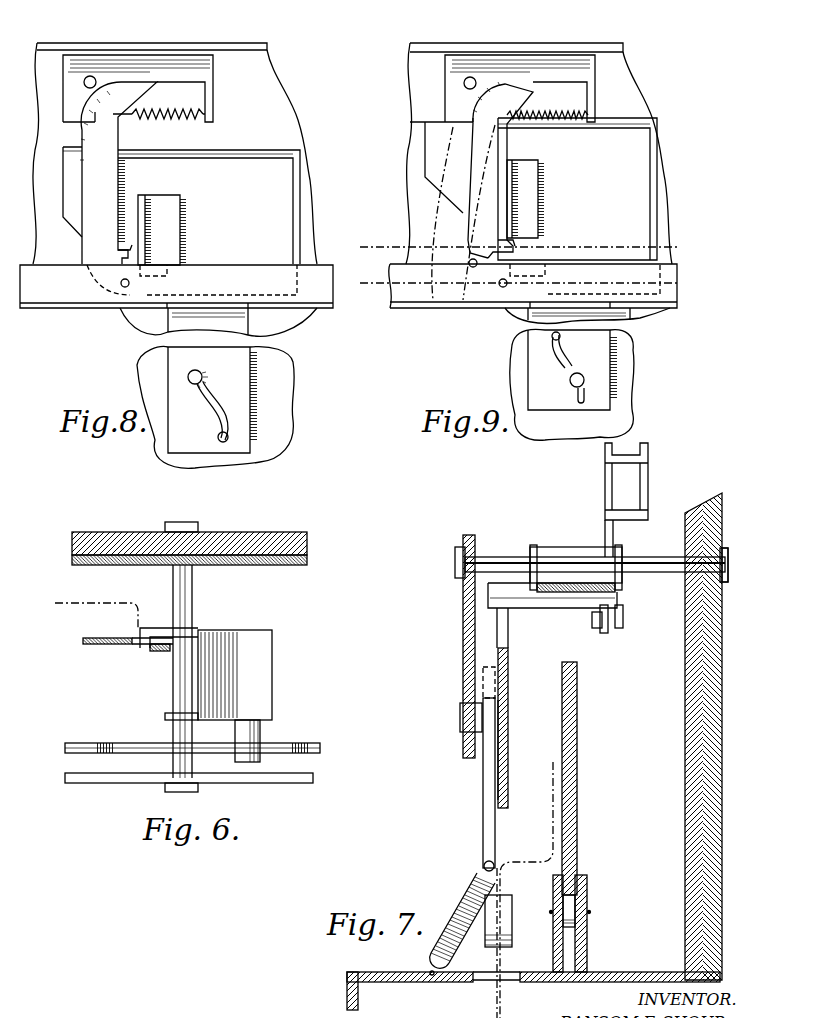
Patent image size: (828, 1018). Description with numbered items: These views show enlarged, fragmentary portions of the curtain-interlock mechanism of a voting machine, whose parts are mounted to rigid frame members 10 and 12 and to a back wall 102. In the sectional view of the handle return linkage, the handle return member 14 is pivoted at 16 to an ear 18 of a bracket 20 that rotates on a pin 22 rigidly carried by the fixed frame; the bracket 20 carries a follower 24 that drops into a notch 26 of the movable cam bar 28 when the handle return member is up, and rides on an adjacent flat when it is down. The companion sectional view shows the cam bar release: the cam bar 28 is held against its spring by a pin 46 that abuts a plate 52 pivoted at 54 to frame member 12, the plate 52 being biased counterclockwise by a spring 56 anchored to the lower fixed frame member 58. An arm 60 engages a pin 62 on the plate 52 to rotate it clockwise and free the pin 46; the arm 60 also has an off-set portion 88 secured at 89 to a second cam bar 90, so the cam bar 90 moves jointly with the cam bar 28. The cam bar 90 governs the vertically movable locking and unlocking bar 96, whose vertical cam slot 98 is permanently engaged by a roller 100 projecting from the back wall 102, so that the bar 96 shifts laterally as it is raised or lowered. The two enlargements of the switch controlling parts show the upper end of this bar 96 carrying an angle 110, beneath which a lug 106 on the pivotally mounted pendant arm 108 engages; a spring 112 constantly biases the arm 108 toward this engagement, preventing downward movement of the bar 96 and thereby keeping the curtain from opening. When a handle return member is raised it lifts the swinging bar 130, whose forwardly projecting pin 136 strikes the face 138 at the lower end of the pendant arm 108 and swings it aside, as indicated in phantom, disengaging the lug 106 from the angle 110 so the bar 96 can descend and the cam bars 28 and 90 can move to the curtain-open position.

In FIG. 9, the rigid frame member 10 is at (522, 40).
In FIG. 6, the rigid frame member 12 is at (118, 780).
In FIG. 7, the rigid frame member 12 is at (465, 665).
In FIG. 6, the handle return member 14 is at (108, 646).
In FIG. 7, the handle return member 14 is at (652, 481).
In FIG. 6, the pivot 16 is at (157, 652).
In FIG. 7, the pivot 16 is at (600, 618).
In FIG. 6, the ear 18 is at (163, 626).
In FIG. 7, the ear 18 is at (617, 605).
In FIG. 6, the bracket 20 is at (241, 630).
In FIG. 7, the bracket 20 is at (568, 562).
In FIG. 6, the pin 22 is at (185, 601).
In FIG. 7, the pin 22 is at (507, 561).
In FIG. 6, the follower 24 is at (252, 735).
In FIG. 7, the follower 24 is at (517, 598).
In FIG. 6, the notch 26 is at (128, 745).
In FIG. 7, the notch 26 is at (503, 640).
In FIG. 6, the movable cam bar 28 is at (305, 750).
In FIG. 7, the movable cam bar 28 is at (508, 745).
In FIG. 7, the pin 46 is at (488, 667).
In FIG. 7, the plate 52 is at (483, 828).
In FIG. 7, the pivot 54 is at (460, 720).
In FIG. 7, the spring 56 is at (462, 892).
In FIG. 7, the lower fixed frame member 58 is at (347, 992).
In FIG. 7, the arm 60 is at (495, 1002).
In FIG. 7, the pin 62 is at (510, 905).
In FIG. 7, the off-set portion 88 is at (553, 818).
In FIG. 7, the securing point 89 is at (553, 793).
In FIG. 7, the second cam bar 90 is at (577, 748).
In FIG. 8, the locking and unlocking bar 96 is at (245, 445).
In FIG. 9, the locking and unlocking bar 96 is at (597, 400).
In FIG. 8, the vertical cam slot 98 is at (215, 450).
In FIG. 9, the vertical cam slot 98 is at (620, 347).
In FIG. 8, the roller 100 is at (188, 376).
In FIG. 9, the roller 100 is at (575, 387).
In FIG. 8, the back wall 102 is at (285, 383).
In FIG. 9, the back wall 102 is at (628, 393).
In FIG. 6, the back wall 102 is at (285, 566).
In FIG. 7, the back wall 102 is at (685, 795).
In FIG. 8, the lug 106 is at (132, 243).
In FIG. 9, the lug 106 is at (510, 247).
In FIG. 8, the pendant arm 108 is at (110, 182).
In FIG. 9, the pendant arm 108 is at (488, 152).
In FIG. 8, the angle 110 is at (172, 213).
In FIG. 9, the angle 110 is at (528, 186).
In FIG. 8, the spring 112 is at (161, 124).
In FIG. 9, the spring 112 is at (548, 122).
In FIG. 8, the bar 130 is at (67, 296).
In FIG. 9, the bar 130 is at (680, 290).
In FIG. 8, the pin 136 is at (121, 291).
In FIG. 9, the pin 136 is at (500, 290).
In FIG. 8, the face 138 is at (130, 267).
In FIG. 9, the face 138 is at (510, 265).